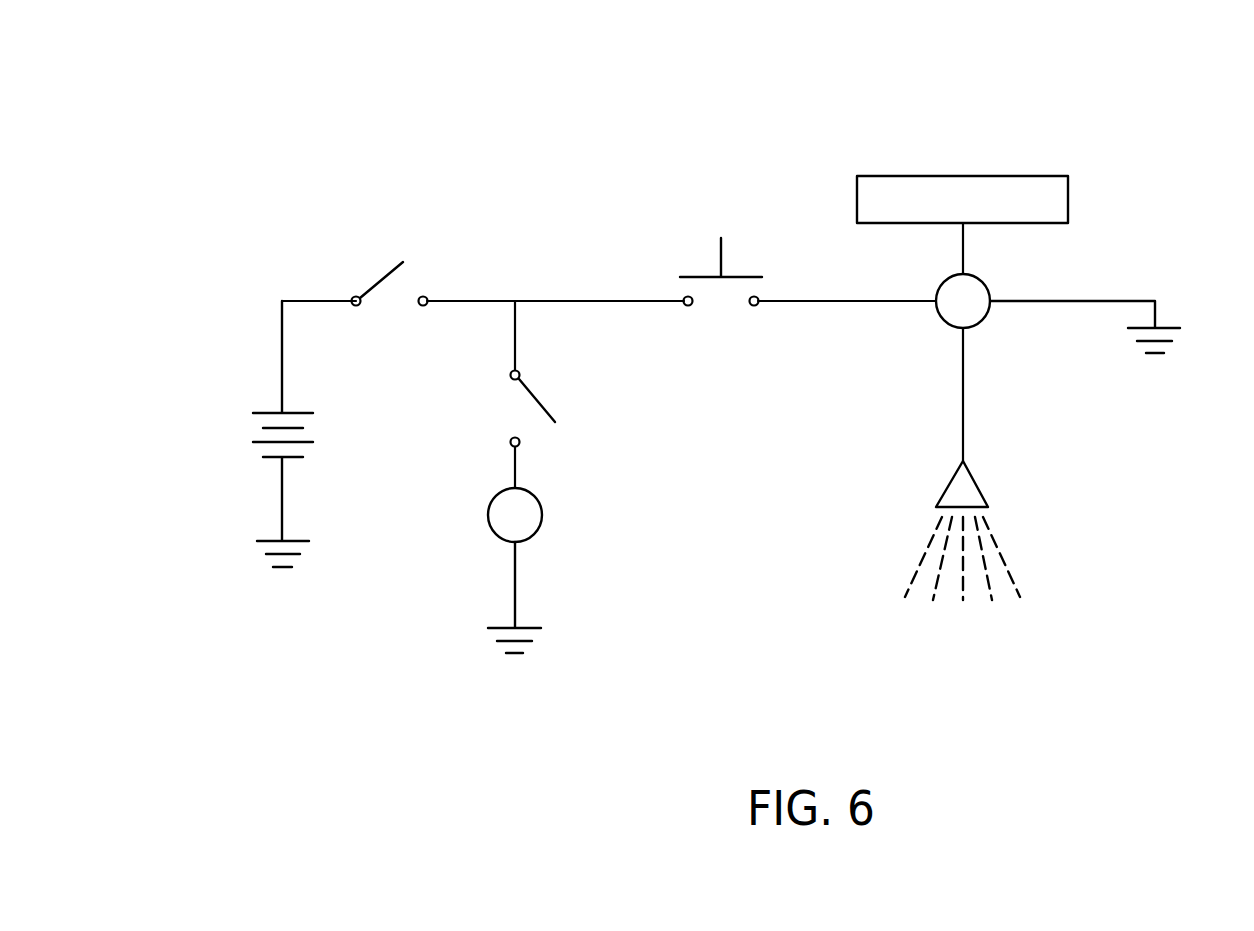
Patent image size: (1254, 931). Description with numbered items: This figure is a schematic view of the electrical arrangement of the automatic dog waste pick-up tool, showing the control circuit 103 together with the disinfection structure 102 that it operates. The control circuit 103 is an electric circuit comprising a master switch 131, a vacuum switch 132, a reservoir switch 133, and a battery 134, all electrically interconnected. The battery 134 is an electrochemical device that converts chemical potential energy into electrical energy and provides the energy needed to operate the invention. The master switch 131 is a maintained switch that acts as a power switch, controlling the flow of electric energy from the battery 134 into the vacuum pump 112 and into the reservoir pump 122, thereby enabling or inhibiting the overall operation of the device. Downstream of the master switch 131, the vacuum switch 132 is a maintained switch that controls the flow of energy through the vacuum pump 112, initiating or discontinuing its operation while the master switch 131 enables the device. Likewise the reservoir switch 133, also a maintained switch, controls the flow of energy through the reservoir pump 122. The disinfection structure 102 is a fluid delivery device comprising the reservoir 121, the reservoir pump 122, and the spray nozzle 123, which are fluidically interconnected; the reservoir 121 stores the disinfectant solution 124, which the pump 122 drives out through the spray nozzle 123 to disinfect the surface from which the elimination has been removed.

The disinfection structure 102 is at (963, 158).
The control circuit 103 is at (228, 257).
The vacuum pump 112 is at (542, 509).
The reservoir 121 is at (1069, 192).
The reservoir pump 122 is at (982, 279).
The spray nozzle 123 is at (975, 480).
The disinfectant solution 124 is at (1007, 550).
The master switch 131 is at (385, 272).
The vacuum switch 132 is at (505, 403).
The reservoir switch 133 is at (705, 262).
The battery 134 is at (313, 433).